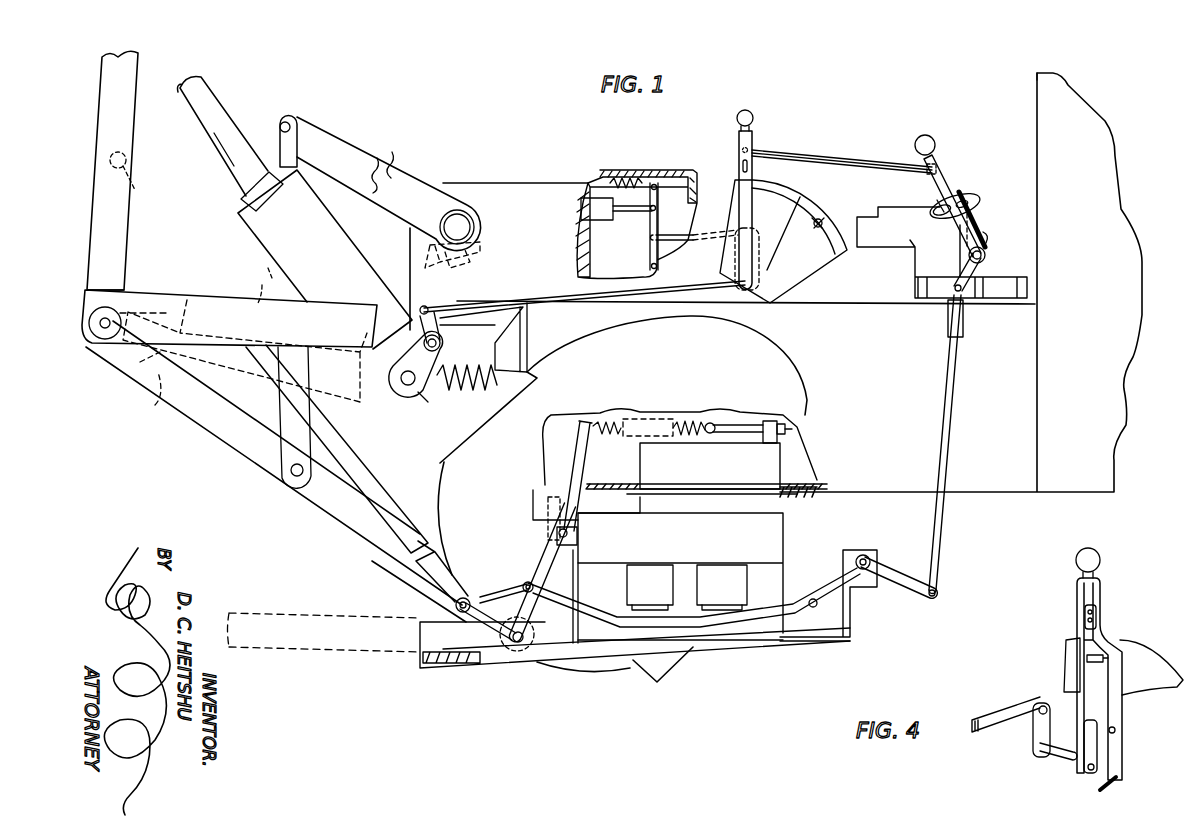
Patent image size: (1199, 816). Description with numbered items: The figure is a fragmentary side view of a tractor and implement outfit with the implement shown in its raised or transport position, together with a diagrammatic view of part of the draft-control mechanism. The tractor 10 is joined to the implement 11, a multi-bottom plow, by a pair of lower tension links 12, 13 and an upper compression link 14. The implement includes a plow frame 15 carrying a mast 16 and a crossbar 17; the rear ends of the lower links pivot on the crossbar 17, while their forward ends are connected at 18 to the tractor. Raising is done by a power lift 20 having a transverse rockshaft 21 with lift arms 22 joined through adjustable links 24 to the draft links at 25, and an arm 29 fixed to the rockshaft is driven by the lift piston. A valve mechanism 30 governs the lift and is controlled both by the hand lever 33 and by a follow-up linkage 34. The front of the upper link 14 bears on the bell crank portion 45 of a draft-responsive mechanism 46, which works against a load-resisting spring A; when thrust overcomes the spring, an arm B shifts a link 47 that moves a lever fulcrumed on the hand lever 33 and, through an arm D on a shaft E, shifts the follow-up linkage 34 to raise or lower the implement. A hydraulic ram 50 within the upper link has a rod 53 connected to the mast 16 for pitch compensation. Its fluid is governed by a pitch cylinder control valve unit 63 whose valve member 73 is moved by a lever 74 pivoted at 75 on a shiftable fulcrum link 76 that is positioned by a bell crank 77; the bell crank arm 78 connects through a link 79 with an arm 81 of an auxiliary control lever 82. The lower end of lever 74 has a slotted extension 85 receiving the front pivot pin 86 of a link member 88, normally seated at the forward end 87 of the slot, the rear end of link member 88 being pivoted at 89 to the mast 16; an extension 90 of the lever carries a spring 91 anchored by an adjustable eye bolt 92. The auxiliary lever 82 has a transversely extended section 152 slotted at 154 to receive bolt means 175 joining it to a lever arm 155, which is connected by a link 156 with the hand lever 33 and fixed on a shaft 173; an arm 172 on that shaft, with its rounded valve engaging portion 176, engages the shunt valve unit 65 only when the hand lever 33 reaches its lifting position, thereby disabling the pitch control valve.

In FIG. 1, the tractor 10 is at (1010, 98).
In FIG. 1, the implement 11 is at (169, 290).
In FIG. 1, the lower tension link 12 is at (310, 612).
In FIG. 1, the lower tension link 13 is at (230, 432).
In FIG. 1, the upper compression link 14 is at (232, 102).
In FIG. 1, the plow frame 15 is at (218, 293).
In FIG. 1, the mast 16 is at (150, 88).
In FIG. 1, the crossbar 17 is at (130, 305).
In FIG. 1, the pivot connection 18 is at (529, 646).
In FIG. 1, the power lift 20 is at (538, 170).
In FIG. 1, the rockshaft 21 is at (458, 222).
In FIG. 1, the lift arm 22 is at (388, 166).
In FIG. 1, the adjustable link 24 is at (305, 142).
In FIG. 1, the connection of adjustable link to draft link 25 is at (290, 482).
In FIG. 1, the arm 29 is at (410, 266).
In FIG. 1, the valve mechanism 30 is at (588, 196).
In FIG. 1, the manually operated control lever 33 is at (760, 126).
In FIG. 4, the manually operated control lever 33 is at (1075, 603).
In FIG. 1, the follow-up linkage 34 is at (668, 248).
In FIG. 4, the follow-up linkage 34 is at (1008, 713).
In FIG. 1, the bell crank portion 45 is at (398, 388).
In FIG. 1, the load- or draft-responsive mechanism 46 is at (428, 398).
In FIG. 1, the link 47 is at (570, 296).
In FIG. 4, the link 47 is at (1118, 785).
In FIG. 1, the hydraulic ram 50 is at (268, 270).
In FIG. 1, the rod 53 is at (230, 147).
In FIG. 1, the pitch cylinder control valve unit 63 is at (772, 527).
In FIG. 1, the shunt valve unit 65 is at (884, 203).
In FIG. 1, the valve member 73 is at (578, 537).
In FIG. 1, the lever 74 is at (520, 522).
In FIG. 1, the pivot 75 is at (525, 582).
In FIG. 1, the link 76 is at (700, 627).
In FIG. 1, the bell crank 77 is at (889, 560).
In FIG. 1, the arm 78 is at (900, 585).
In FIG. 1, the link 79 is at (945, 437).
In FIG. 1, the arm 81 is at (960, 272).
In FIG. 1, the auxiliary manually operated control lever 82 is at (918, 134).
In FIG. 1, the slotted extension 85 is at (482, 645).
In FIG. 1, the front end pivot pin 86 is at (452, 608).
In FIG. 1, the forward end of slot 87 is at (494, 602).
In FIG. 1, the pitch cylinder control valve operating link member 88 is at (370, 484).
In FIG. 1, the pivotal connection 89 is at (128, 158).
In FIG. 1, the extension 90 is at (585, 455).
In FIG. 1, the spring 91 is at (690, 427).
In FIG. 1, the adjustable eye bolt 92 is at (745, 426).
In FIG. 1, the transversely extended section 152 is at (962, 198).
In FIG. 1, the slot 154 is at (981, 206).
In FIG. 1, the lever arm 155 is at (940, 166).
In FIG. 1, the link 156 is at (850, 161).
In FIG. 1, the arm 172 is at (988, 235).
In FIG. 1, the shaft 173 is at (986, 259).
In FIG. 1, the bolt means 175 is at (936, 202).
In FIG. 1, the rounded valve engaging portion 176 is at (986, 220).
In FIG. 1, the load-resisting spring A is at (466, 392).
In FIG. 1, the arm B is at (445, 340).
In FIG. 4, the arm D is at (1100, 742).
In FIG. 4, the shaft E is at (1060, 756).